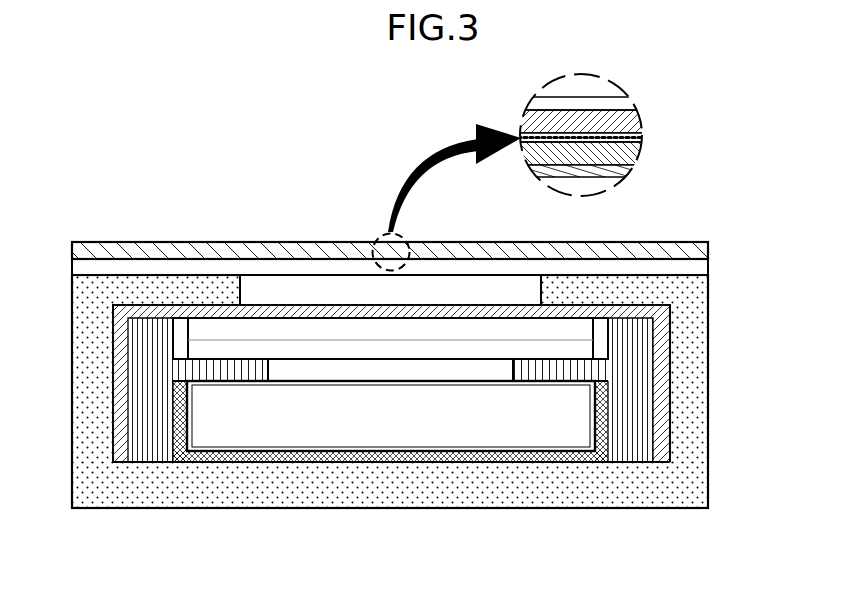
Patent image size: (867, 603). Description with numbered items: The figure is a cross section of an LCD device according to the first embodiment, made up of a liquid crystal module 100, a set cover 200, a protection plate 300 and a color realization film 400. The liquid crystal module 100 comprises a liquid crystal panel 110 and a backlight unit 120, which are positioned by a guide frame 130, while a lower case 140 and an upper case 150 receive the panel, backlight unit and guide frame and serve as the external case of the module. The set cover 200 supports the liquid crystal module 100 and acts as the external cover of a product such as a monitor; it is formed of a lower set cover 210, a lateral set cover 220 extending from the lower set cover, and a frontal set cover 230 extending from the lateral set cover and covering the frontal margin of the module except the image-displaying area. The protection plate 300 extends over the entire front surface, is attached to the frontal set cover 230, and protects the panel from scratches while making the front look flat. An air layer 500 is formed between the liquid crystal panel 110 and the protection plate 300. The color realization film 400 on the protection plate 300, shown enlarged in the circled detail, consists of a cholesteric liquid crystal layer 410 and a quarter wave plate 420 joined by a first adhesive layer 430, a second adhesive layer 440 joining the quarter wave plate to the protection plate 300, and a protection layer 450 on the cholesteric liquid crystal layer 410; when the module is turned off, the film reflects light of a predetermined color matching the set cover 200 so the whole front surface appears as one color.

The liquid crystal module 100 is at (375, 449).
The liquid crystal panel 110 is at (222, 347).
The backlight unit 120 is at (391, 470).
The guide frame 130 is at (160, 455).
The lower case 140 is at (300, 458).
The upper case 150 is at (123, 457).
The set cover 200 is at (450, 391).
The lower set cover 210 is at (645, 497).
The lateral set cover 220 is at (703, 388).
The frontal set cover 230 is at (645, 290).
The protection plate 300 is at (703, 267).
The color realization film 400 is at (703, 250).
The cholesteric liquid crystal layer 410 is at (630, 122).
The quarter wave plate 420 is at (633, 155).
The first adhesive layer 430 is at (640, 139).
The second adhesive layer 440 is at (627, 168).
The protection layer 450 is at (633, 103).
The air layer 500 is at (302, 292).